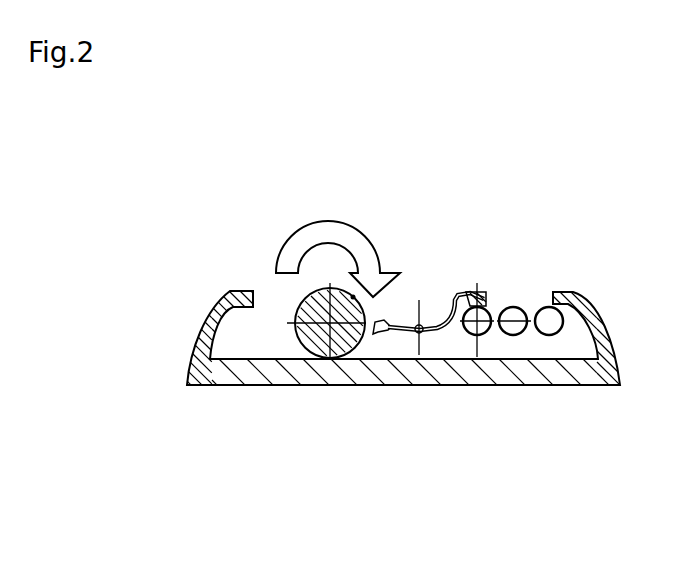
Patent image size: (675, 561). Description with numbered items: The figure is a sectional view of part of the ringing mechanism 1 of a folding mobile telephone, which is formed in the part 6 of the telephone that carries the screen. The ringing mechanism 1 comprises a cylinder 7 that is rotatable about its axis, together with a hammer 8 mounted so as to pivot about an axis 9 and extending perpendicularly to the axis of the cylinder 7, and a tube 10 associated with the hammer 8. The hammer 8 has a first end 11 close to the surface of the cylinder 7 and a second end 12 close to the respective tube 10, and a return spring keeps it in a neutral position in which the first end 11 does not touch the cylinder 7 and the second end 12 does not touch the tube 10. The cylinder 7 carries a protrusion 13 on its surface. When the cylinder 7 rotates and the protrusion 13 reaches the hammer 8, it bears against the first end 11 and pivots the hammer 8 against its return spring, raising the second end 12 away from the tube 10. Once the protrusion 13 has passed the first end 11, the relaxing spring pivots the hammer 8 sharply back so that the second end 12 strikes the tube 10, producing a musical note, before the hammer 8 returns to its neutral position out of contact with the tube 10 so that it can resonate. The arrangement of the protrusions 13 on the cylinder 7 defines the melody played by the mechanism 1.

The ringing mechanism 1 is at (489, 262).
The part 6 is at (180, 344).
The cylinder 7 is at (323, 340).
The hammer 8 is at (452, 298).
The axis 9 is at (425, 333).
The tube 10 is at (549, 321).
The first end 11 is at (375, 333).
The second end 12 is at (488, 300).
The protrusion 13 is at (352, 296).